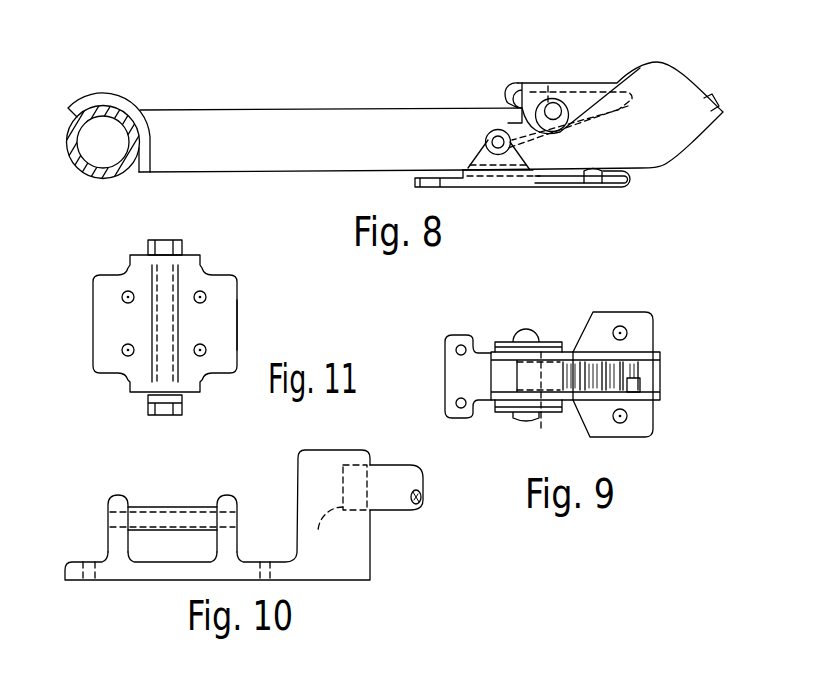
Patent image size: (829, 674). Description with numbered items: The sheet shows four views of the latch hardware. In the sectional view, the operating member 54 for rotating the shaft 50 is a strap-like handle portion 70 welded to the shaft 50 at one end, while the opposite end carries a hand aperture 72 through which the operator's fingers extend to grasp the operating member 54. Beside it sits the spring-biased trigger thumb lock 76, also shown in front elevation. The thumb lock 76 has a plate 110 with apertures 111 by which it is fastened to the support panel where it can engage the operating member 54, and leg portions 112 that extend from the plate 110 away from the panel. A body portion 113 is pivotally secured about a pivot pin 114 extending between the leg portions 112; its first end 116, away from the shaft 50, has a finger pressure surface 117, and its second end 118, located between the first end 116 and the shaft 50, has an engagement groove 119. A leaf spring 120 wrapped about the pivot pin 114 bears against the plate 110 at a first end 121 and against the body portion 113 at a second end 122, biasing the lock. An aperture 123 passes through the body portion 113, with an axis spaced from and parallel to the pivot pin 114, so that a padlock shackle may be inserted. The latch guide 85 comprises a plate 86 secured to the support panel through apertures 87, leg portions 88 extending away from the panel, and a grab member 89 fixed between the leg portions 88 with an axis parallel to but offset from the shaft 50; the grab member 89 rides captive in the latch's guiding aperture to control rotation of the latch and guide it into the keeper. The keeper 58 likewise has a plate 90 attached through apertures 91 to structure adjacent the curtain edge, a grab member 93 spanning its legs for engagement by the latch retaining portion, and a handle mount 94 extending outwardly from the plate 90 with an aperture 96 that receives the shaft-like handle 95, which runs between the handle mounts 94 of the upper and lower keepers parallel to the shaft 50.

In FIG. 8, the shaft 50 is at (100, 176).
In FIG. 8, the operating member 54 is at (170, 84).
In FIG. 8, the handle portion 70 is at (280, 118).
In FIG. 8, the hand aperture 72 is at (692, 140).
In FIG. 8, the trigger thumb lock 76 is at (600, 72).
In FIG. 9, the trigger thumb lock 76 is at (648, 302).
In FIG. 11, the latch guide 85 is at (236, 272).
In FIG. 11, the plate 86 is at (232, 322).
In FIG. 11, the apertures 87 is at (121, 349).
In FIG. 11, the leg portions 88 is at (194, 258).
In FIG. 10, the leg portions 88 is at (118, 495).
In FIG. 11, the grab member 89 is at (158, 272).
In FIG. 10, the plate 90 is at (103, 580).
In FIG. 10, the apertures 91 is at (88, 565).
In FIG. 10, the keeper 58 is at (103, 518).
In FIG. 10, the grab member 93 is at (172, 507).
In FIG. 10, the handle mount 94 is at (230, 495).
In FIG. 10, the handle 95 is at (390, 506).
In FIG. 10, the aperture 96 is at (318, 532).
In FIG. 8, the plate 110 is at (558, 182).
In FIG. 9, the plate 110 is at (650, 326).
In FIG. 8, the apertures 111 is at (594, 184).
In FIG. 9, the apertures 111 is at (620, 326).
In FIG. 8, the leg portions 112 is at (480, 178).
In FIG. 9, the leg portions 112 is at (552, 343).
In FIG. 9, the body portion 113 is at (572, 401).
In FIG. 8, the pivot pin 114 is at (492, 130).
In FIG. 9, the pivot pin 114 is at (526, 333).
In FIG. 8, the first end 116 is at (668, 62).
In FIG. 9, the first end 116 is at (663, 360).
In FIG. 8, the finger pressure surface 117 is at (626, 85).
In FIG. 9, the finger pressure surface 117 is at (640, 387).
In FIG. 8, the second end 118 is at (506, 80).
In FIG. 9, the second end 118 is at (492, 352).
In FIG. 8, the engagement groove 119 is at (540, 100).
In FIG. 9, the engagement groove 119 is at (490, 376).
In FIG. 8, the leaf spring 120 is at (636, 105).
In FIG. 8, the first end 121 is at (590, 170).
In FIG. 8, the second end 122 is at (584, 88).
In FIG. 8, the aperture 123 is at (547, 98).
In FIG. 9, the aperture 123 is at (541, 420).